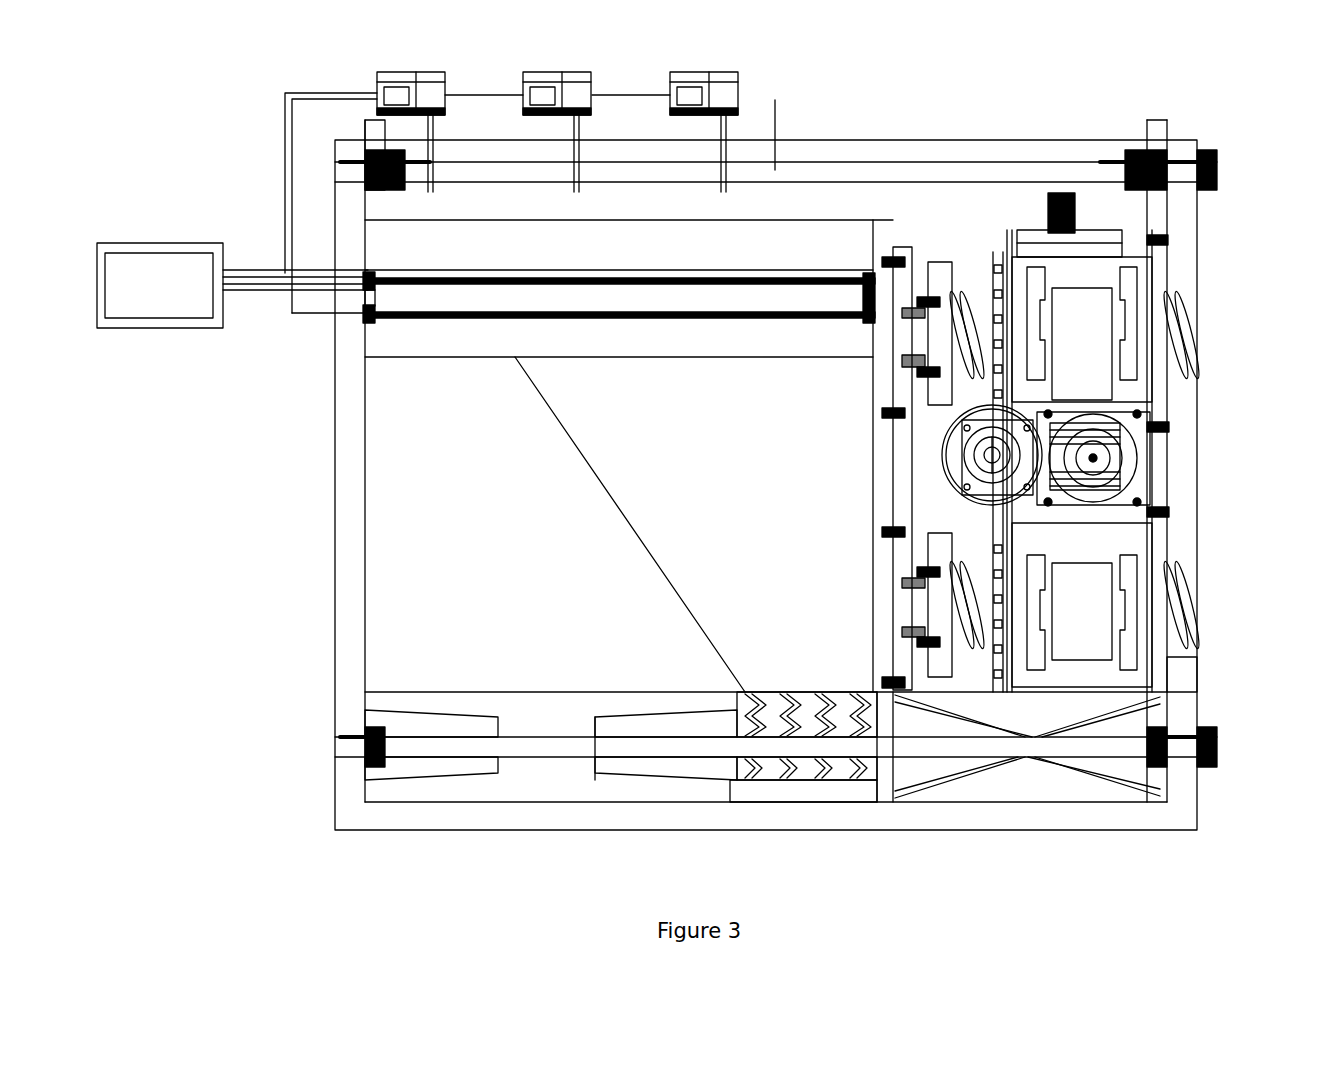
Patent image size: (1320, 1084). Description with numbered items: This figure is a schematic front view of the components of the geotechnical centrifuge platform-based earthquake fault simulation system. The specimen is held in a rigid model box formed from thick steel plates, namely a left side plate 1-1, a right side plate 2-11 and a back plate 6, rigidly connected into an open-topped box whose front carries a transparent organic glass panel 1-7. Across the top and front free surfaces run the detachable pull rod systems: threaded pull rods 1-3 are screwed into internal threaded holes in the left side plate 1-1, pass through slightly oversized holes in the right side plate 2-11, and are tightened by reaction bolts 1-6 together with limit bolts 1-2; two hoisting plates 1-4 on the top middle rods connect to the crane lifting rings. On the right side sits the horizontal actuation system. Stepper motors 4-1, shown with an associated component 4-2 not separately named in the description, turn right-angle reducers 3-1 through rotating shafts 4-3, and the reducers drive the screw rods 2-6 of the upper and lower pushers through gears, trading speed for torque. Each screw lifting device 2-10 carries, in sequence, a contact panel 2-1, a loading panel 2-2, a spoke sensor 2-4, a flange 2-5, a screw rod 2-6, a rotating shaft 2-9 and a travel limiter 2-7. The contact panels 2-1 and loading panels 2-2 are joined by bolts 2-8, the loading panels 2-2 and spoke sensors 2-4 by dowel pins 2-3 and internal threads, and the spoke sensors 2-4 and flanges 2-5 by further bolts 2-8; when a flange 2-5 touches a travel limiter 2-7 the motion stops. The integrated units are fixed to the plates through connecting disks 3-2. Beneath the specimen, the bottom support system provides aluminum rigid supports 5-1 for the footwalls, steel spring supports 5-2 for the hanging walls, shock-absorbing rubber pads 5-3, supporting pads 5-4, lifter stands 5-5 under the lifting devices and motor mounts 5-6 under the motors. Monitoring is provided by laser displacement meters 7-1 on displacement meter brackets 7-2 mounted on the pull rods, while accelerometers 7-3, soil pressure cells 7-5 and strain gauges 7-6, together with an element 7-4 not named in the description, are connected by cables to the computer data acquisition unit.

The left side plate 1-1 is at (737, 475).
The limit bolts 1-2 is at (368, 442).
The threaded pull rods 1-3 is at (776, 423).
The hoisting plates 1-4 is at (1126, 443).
The reaction bolts 1-6 is at (1238, 430).
The organic glass panel 1-7 is at (629, 153).
The contact panels 2-1 is at (839, 456).
The loading panels 2-2 is at (849, 462).
The dowel pins 2-3 is at (857, 472).
The spoke sensors 2-4 is at (863, 469).
The flanges 2-5 is at (881, 470).
The screw rods 2-6 is at (888, 472).
The travel limiters 2-7 is at (977, 451).
The bolts 2-8 is at (1030, 442).
The rotating shafts 2-9 is at (1091, 213).
The screw lifting devices 2-10 is at (1157, 461).
The right side plate 2-11 is at (1230, 482).
The right-angle reducers 3-1 is at (972, 463).
The connecting disks 3-2 is at (925, 459).
The stepper motors 4-1 is at (1137, 459).
The gear shaft 4-2 is at (1156, 458).
The rotating shafts 4-3 is at (1143, 461).
The rigid supports 5-1 is at (551, 796).
The spring supports 5-2 is at (782, 787).
The shock-absorbing rubber pads 5-3 is at (807, 815).
The supporting pads 5-4 is at (811, 831).
The lifter stands 5-5 is at (930, 787).
The motor mounts 5-6 is at (781, 849).
The back plate 6 is at (1027, 789).
The laser displacement meters 7-1 is at (557, 132).
The displacement meter brackets 7-2 is at (383, 192).
The accelerometers 7-3 is at (576, 268).
The connecting piece 7-4 is at (326, 299).
The soil pressure cells 7-5 is at (325, 324).
The strain gauges 7-6 is at (577, 326).